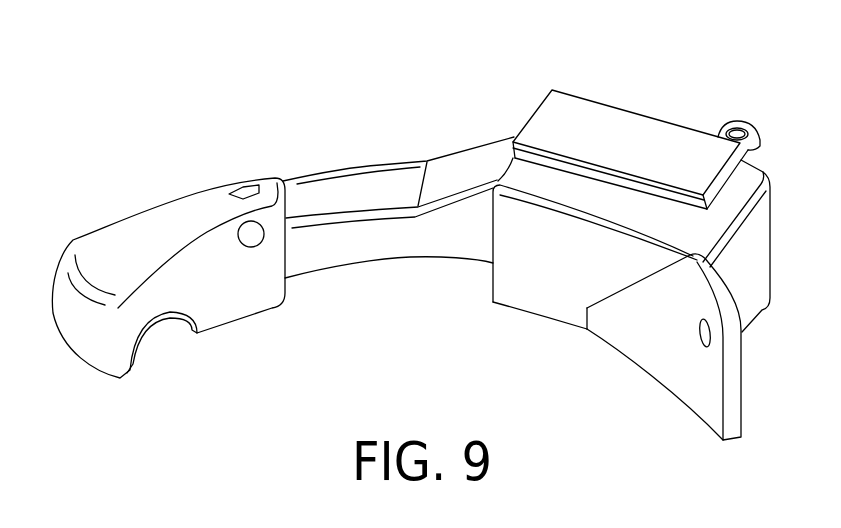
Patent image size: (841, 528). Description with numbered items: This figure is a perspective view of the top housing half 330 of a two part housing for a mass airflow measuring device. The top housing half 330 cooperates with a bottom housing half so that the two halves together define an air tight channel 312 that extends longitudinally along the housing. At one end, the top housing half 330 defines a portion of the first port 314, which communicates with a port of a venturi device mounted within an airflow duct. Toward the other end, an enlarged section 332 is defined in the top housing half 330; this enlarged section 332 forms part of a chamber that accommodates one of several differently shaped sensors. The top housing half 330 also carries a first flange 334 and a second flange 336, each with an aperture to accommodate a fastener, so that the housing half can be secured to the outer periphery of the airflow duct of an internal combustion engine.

The channel 312 is at (398, 262).
The first port 314 is at (163, 323).
The top housing half 330 is at (358, 156).
The enlarged section 332 is at (618, 120).
The first flange 334 is at (192, 237).
The second flange 336 is at (682, 395).